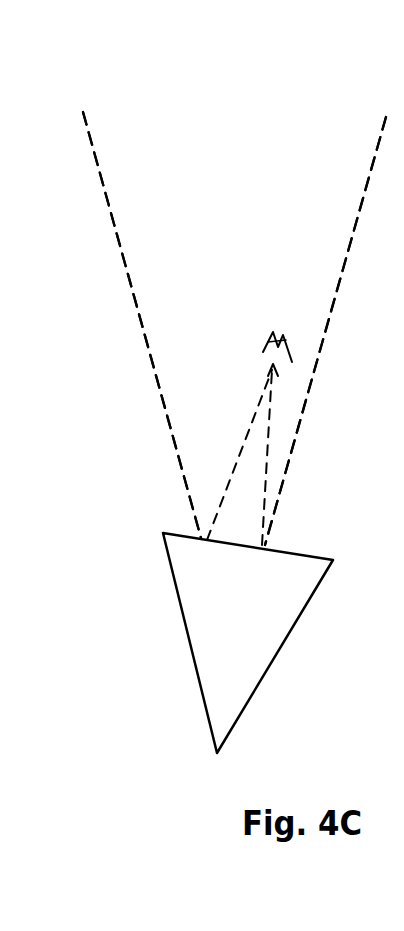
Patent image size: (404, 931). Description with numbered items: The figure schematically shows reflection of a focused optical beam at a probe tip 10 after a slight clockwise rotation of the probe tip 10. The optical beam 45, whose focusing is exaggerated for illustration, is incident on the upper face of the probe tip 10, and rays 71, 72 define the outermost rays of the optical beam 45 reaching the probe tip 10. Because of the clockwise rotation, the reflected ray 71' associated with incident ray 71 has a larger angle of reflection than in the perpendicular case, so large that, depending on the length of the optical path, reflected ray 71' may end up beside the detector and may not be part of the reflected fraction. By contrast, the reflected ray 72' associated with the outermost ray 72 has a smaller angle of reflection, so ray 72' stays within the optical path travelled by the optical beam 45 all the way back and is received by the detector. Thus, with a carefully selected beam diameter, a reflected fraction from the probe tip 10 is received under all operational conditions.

The probe tip 10 is at (267, 667).
The optical beam 45 is at (213, 148).
The ray 71 is at (142, 325).
The outer most ray 72 is at (330, 331).
The reflected ray 71' is at (238, 452).
The reflected ray 72' is at (312, 457).